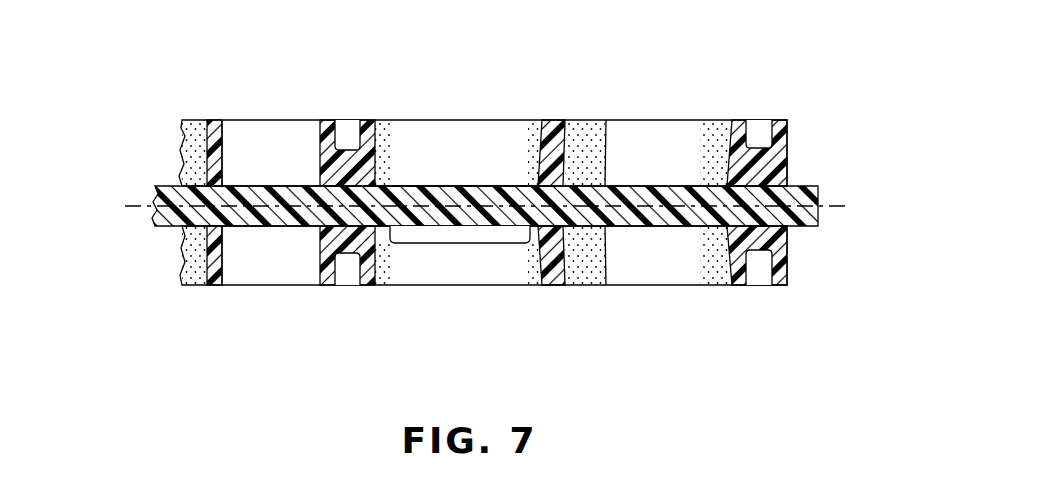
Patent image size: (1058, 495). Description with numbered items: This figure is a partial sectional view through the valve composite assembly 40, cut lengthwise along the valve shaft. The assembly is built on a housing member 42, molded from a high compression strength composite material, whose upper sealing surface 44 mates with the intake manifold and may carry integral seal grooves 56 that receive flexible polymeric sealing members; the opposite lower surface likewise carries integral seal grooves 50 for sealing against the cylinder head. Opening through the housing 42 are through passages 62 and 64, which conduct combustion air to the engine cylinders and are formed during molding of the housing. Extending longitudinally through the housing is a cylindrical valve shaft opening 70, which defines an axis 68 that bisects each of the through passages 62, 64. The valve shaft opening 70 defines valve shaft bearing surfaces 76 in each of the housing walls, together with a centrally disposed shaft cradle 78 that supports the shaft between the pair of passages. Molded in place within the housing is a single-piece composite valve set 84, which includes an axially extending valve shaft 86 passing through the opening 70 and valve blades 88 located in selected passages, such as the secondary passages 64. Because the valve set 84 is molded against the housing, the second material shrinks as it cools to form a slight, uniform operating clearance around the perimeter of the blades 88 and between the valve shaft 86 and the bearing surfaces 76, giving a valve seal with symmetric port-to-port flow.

The valve composite assembly 40 is at (159, 156).
The housing member 42 is at (790, 138).
The upper sealing surface 44 is at (773, 120).
The seal grooves 50 is at (758, 250).
The seal grooves 56 is at (758, 147).
The through passages 62 is at (653, 137).
The through passages 64 is at (458, 140).
The axis 68 is at (846, 206).
The valve shaft opening 70 is at (373, 223).
The valve shaft bearing surfaces 76 is at (605, 194).
The shaft cradle 78 is at (222, 225).
The valve set 84 is at (509, 176).
The valve shaft 86 is at (604, 186).
The valve blades 88 is at (492, 245).